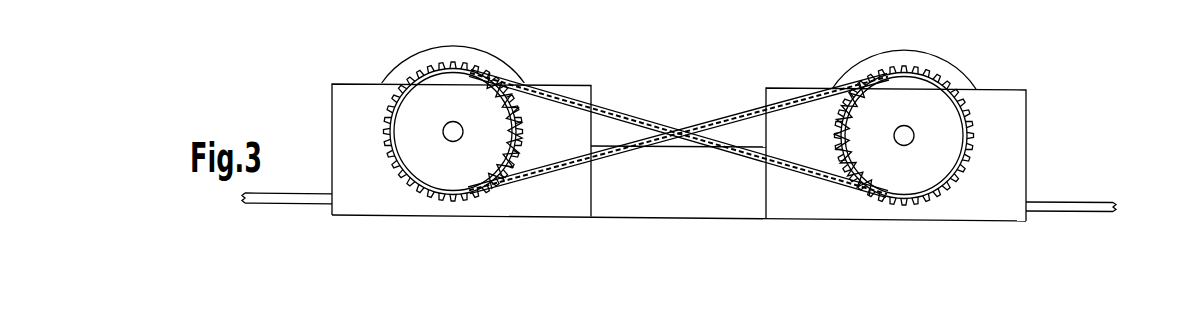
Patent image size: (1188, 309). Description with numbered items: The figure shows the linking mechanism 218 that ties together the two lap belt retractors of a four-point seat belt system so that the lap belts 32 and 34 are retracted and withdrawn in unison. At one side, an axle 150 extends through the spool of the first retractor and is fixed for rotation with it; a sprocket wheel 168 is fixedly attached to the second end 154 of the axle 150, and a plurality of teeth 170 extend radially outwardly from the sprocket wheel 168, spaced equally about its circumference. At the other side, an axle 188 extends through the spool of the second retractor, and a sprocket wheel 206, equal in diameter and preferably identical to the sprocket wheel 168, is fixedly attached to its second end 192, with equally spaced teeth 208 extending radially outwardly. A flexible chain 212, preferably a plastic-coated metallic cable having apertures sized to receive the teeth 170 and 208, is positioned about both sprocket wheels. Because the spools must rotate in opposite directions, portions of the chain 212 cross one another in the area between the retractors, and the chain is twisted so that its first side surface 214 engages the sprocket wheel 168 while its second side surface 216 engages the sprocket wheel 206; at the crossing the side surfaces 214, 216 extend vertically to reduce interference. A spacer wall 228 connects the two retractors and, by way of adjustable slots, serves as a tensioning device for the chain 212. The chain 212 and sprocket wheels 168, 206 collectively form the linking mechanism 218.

The lap belt 32 is at (1078, 207).
The lap belt 34 is at (294, 197).
The axle 150 is at (915, 135).
The second end of axle 154 is at (905, 126).
The sprocket wheel 168 is at (902, 163).
The teeth 170 is at (840, 160).
The axle 188 is at (456, 120).
The second end of axle 192 is at (453, 142).
The sprocket wheel 206 is at (486, 154).
The teeth 208 is at (523, 132).
The chain 212 is at (739, 110).
The first side surface 214 is at (702, 147).
The second side surface 216 is at (703, 124).
The linking mechanism 218 is at (613, 228).
The spacer wall 228 is at (712, 196).